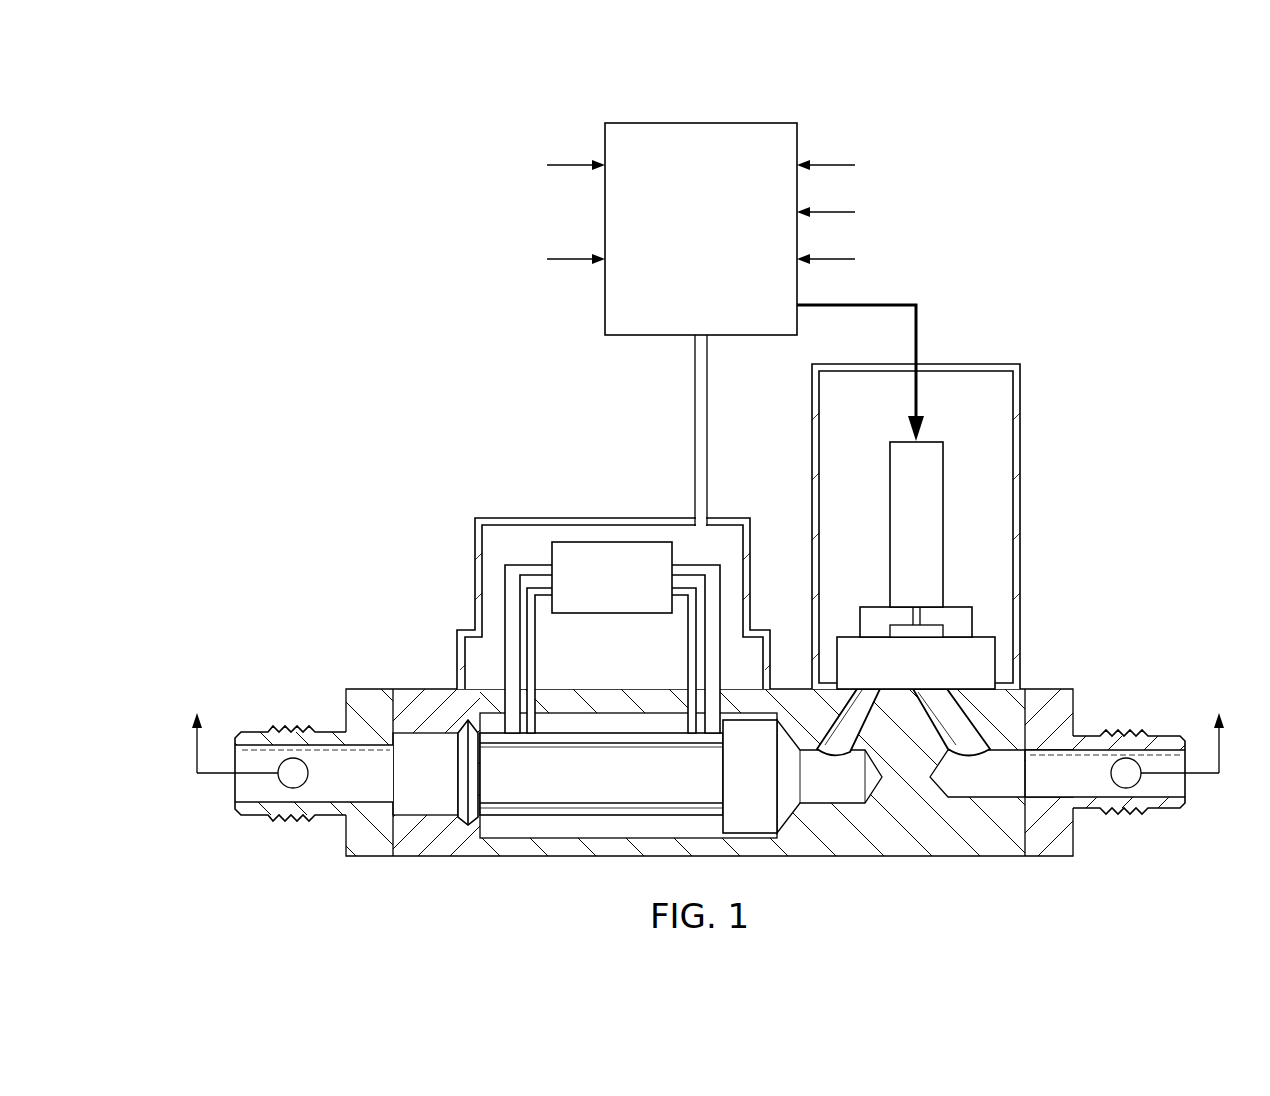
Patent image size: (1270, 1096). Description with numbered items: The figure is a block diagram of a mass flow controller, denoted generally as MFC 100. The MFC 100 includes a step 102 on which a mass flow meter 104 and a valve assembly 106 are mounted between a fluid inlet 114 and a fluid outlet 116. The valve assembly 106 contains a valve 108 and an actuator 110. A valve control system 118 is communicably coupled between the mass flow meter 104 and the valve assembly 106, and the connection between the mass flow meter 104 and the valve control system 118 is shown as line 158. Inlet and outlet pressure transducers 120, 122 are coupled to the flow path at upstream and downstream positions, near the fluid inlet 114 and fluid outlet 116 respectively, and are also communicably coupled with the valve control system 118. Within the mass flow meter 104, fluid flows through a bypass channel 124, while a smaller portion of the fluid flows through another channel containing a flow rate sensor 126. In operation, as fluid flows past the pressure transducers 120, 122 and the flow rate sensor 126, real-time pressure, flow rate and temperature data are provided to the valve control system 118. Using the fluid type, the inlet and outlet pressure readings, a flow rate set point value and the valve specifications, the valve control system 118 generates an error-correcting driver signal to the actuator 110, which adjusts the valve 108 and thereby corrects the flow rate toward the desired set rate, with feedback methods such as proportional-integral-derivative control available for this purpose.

The mass flow controller 100 is at (1060, 70).
The step 102 is at (943, 857).
The mass flow meter 104 is at (568, 519).
The valve assembly 106 is at (1017, 440).
The valve 108 is at (935, 633).
The actuator 110 is at (930, 526).
The fluid inlet 114 is at (242, 792).
The fluid outlet 116 is at (1176, 785).
The valve control system 118 is at (651, 122).
The inlet pressure transducer 120 is at (297, 789).
The outlet pressure transducer 122 is at (1121, 759).
The bypass channel 124 is at (558, 810).
The flow rate sensor 126 is at (610, 615).
The communication line 158 is at (693, 435).